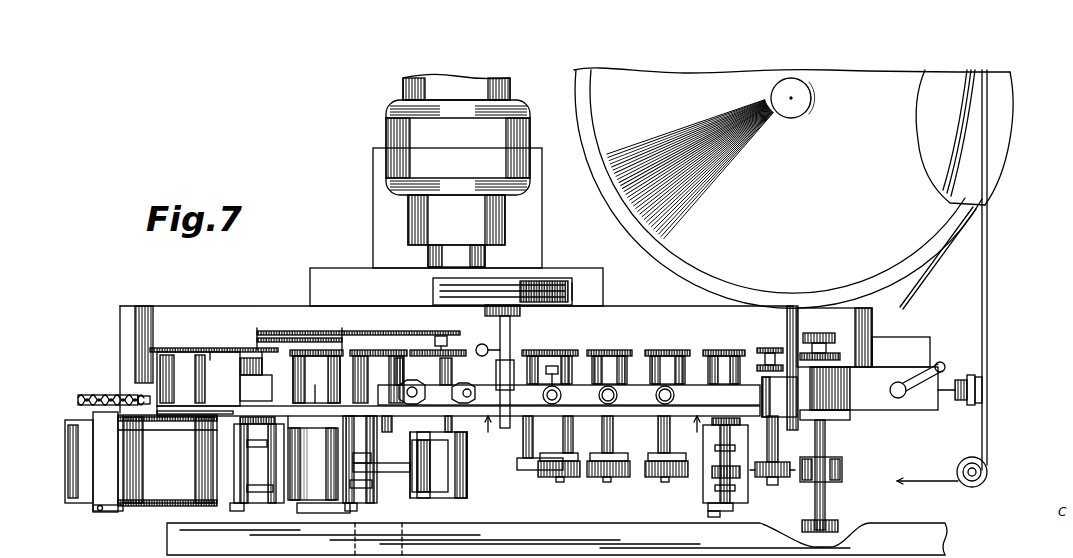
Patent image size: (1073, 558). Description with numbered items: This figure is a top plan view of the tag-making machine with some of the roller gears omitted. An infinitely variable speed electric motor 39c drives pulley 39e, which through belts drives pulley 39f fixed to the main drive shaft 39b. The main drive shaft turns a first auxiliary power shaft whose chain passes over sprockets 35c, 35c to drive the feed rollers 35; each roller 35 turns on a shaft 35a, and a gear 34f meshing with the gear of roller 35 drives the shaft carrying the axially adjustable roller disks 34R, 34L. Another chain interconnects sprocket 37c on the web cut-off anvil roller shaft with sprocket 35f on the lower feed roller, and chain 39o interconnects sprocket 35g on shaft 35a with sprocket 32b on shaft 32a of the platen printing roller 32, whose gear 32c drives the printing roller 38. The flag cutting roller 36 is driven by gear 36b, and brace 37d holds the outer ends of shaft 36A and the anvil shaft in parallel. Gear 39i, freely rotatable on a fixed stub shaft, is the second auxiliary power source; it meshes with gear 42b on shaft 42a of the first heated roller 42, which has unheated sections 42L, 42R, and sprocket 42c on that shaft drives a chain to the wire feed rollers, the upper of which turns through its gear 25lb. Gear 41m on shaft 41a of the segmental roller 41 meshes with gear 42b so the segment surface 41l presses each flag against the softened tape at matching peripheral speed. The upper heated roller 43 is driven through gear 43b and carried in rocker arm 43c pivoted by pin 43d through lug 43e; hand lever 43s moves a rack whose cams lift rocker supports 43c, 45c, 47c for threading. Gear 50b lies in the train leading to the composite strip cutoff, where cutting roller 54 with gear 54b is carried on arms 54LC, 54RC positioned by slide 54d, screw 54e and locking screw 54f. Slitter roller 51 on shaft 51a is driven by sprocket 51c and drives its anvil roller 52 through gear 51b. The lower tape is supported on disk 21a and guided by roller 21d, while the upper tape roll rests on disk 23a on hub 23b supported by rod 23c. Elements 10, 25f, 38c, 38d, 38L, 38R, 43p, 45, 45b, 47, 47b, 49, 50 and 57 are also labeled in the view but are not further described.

The frame 10 is at (588, 432).
The disk 21a is at (1003, 92).
The guide roller 21d is at (988, 472).
The disk 23a is at (598, 185).
The hub 23b is at (804, 114).
The rod 23c is at (787, 322).
The gear 25lb is at (380, 331).
The bar 25f is at (406, 472).
The platen printing roller 32 is at (182, 476).
The shaft 32a is at (185, 360).
The sprocket 32b is at (164, 348).
The gear 32c is at (210, 414).
The gear 34f is at (250, 417).
The roller disk 34L is at (247, 444).
The roller disk 34R is at (247, 488).
The web feed roller 35 is at (280, 472).
The shaft 35a is at (256, 379).
The sprocket 35c is at (257, 341).
The sprocket 35f is at (257, 338).
The sprocket 35g is at (262, 360).
The flag cutting roller 36 is at (300, 472).
The gear 36b is at (310, 356).
The shaft 36A is at (317, 394).
The sprocket 37c is at (340, 350).
The brace 37d is at (297, 511).
The printing roller 38 is at (135, 475).
The pin 38c is at (128, 510).
The spring 38d is at (102, 395).
The left flange 38L is at (160, 503).
The right flange 38R is at (150, 428).
The main drive shaft 39b is at (511, 325).
The electric motor 39c is at (415, 222).
The pulley 39e is at (433, 300).
The pulley 39f is at (566, 282).
The gear 39i is at (522, 350).
The chain 39o is at (210, 350).
The segmental roller 41 is at (450, 498).
The shaft 41a is at (401, 424).
The segment outer surface 41l is at (425, 498).
The gear 41m is at (425, 392).
The first heated feed roller 42 is at (468, 470).
The shaft 42a is at (452, 422).
The gear 42b is at (484, 344).
The sprocket 42c is at (441, 336).
The unheated section 42L is at (467, 447).
The unheated section 42R is at (470, 486).
The upper heated roller 43 is at (580, 437).
The gear 43b is at (565, 350).
The rocker arm 43c is at (554, 386).
The pin 43d is at (530, 458).
The lug 43e is at (527, 370).
The base plate 43p is at (565, 554).
The hand lever 43s is at (480, 393).
The spindle 45 is at (638, 437).
The drum 45b is at (616, 350).
The rocker support 45c is at (609, 387).
The spindle gear 47 is at (655, 477).
The drum 47b is at (672, 350).
The rocker support 47c is at (666, 387).
The spindle 49 is at (712, 470).
The gear 50 is at (715, 482).
The gear 50b is at (712, 350).
The slitter roller 51 is at (778, 480).
The slitter cutter shaft 51a is at (778, 447).
The gear 51b is at (762, 380).
The sprocket 51c is at (760, 348).
The anvil roller 52 is at (767, 477).
The cutting roller 54 is at (842, 466).
The gear 54b is at (845, 355).
The slide 54d is at (862, 410).
The screw 54e is at (983, 389).
The locking screw 54f is at (890, 389).
The arm 54LC is at (842, 335).
The arm 54RC is at (840, 476).
The element 57 is at (1063, 436).